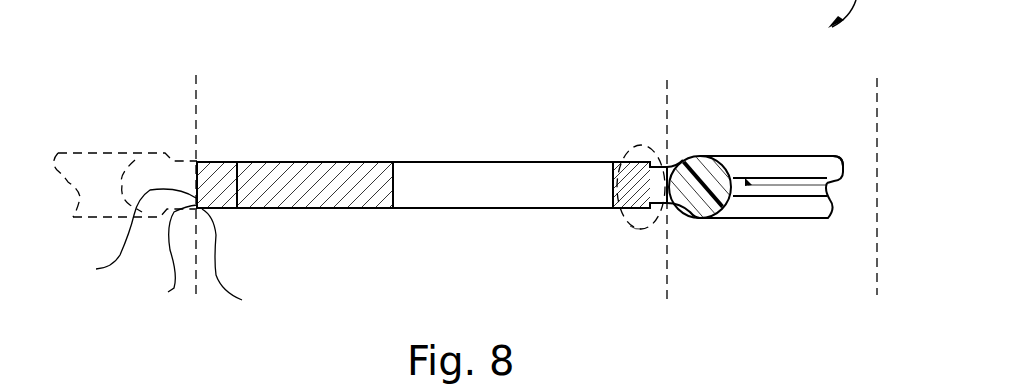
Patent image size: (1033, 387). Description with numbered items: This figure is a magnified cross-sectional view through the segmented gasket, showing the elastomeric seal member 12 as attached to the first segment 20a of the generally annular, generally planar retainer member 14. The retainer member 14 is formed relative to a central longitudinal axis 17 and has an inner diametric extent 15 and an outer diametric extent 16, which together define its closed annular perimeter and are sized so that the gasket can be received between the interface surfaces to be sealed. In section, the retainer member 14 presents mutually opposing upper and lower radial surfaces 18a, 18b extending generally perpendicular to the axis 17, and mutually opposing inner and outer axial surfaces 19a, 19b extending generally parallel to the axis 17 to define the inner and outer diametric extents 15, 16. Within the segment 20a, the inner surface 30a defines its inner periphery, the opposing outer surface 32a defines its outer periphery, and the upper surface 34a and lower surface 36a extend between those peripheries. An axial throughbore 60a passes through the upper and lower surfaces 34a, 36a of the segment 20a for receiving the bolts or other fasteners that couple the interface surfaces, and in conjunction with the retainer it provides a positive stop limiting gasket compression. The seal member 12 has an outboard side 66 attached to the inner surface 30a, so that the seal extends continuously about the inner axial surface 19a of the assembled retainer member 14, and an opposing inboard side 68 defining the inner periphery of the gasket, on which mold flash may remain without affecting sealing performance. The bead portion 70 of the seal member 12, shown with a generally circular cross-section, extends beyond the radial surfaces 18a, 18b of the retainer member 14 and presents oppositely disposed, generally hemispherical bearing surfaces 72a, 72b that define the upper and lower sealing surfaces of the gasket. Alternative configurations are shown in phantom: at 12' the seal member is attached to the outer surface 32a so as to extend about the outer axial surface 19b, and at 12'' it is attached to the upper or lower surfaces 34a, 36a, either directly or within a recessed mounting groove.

The seal member 12 is at (838, 136).
The seal member (phantom, alternative outer configuration) 12' is at (359, 140).
The seal member (phantom, alternative upper/lower surface configuration) 12'' is at (612, 278).
The retainer member 14 is at (200, 160).
The inner diametric extent 15 is at (667, 88).
The outer diametric extent 16 is at (196, 97).
The central longitudinal axis 17 is at (877, 100).
The upper radial surface 18a is at (378, 161).
The lower radial surface 18b is at (360, 210).
The inner axial surface 19a is at (690, 220).
The outer axial surface 19b is at (159, 261).
The first segment 20a is at (242, 265).
The inner surface 30a is at (694, 157).
The outer surface 32a is at (122, 237).
The upper surface 34a is at (293, 161).
The lower surface 36a is at (293, 210).
The axial throughbore 60a is at (534, 199).
The outboard side 66 is at (648, 167).
The inboard side 68 is at (800, 220).
The bead portion 70 is at (704, 155).
The upper bearing surface 72a is at (793, 155).
The lower bearing surface 72b is at (740, 220).